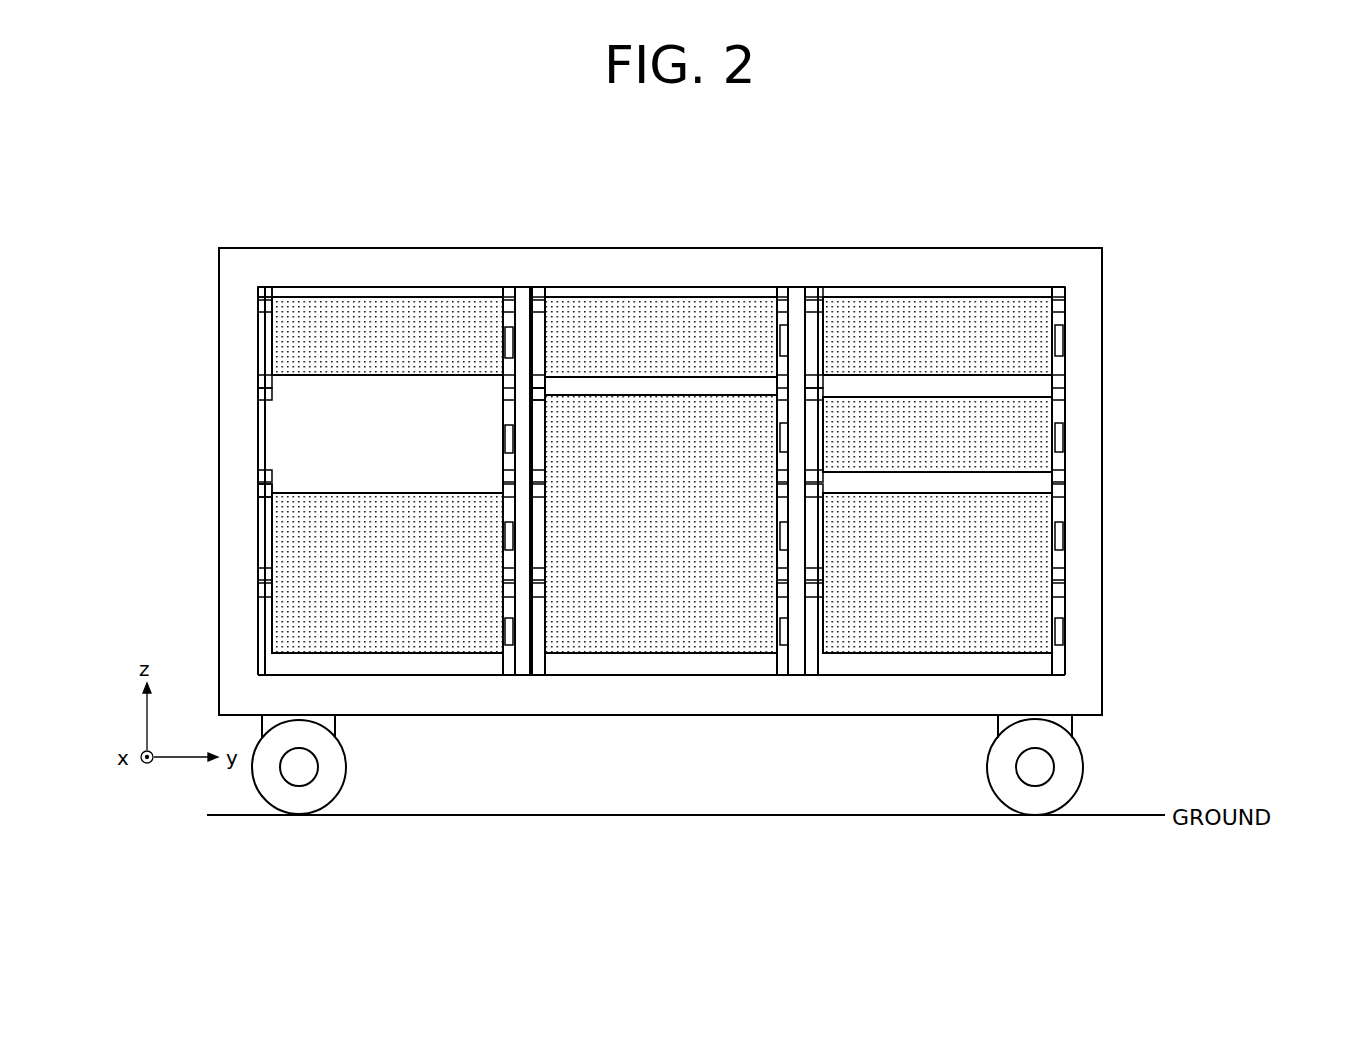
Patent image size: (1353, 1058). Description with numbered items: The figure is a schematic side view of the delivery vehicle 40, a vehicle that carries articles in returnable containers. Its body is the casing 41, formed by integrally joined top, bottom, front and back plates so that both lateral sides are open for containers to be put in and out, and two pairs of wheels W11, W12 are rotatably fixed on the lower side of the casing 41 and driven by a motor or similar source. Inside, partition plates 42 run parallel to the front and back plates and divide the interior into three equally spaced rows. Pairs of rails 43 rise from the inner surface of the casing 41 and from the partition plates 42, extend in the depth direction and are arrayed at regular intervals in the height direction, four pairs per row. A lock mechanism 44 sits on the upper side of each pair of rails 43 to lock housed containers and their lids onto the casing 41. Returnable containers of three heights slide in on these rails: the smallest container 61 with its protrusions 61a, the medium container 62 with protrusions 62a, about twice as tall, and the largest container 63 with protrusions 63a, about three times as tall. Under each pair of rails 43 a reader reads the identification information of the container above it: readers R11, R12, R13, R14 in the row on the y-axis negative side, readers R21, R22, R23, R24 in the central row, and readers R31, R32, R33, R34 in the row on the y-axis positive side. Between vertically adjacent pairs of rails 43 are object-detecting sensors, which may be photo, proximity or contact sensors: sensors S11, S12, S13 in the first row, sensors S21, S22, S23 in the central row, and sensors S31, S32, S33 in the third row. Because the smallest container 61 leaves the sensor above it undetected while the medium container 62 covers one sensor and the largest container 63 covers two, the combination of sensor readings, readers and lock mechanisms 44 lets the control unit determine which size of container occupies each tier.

The delivery vehicle 40 is at (1100, 228).
The casing 41 is at (304, 258).
The partition plate 42 is at (523, 288).
The rail 43 is at (1065, 310).
The lock mechanism 44 is at (1065, 291).
The returnable container of the smallest size 61 is at (387, 336).
The protrusion 61a is at (258, 297).
The returnable container of a medium size 62 is at (387, 573).
The protrusion 62a is at (258, 495).
The returnable container of the largest size 63 is at (661, 524).
The protrusion 63a is at (532, 398).
The sensor S11 is at (258, 380).
The sensor S12 is at (258, 475).
The sensor S13 is at (258, 573).
The sensor S21 is at (542, 383).
The sensor S22 is at (542, 478).
The sensor S23 is at (542, 576).
The sensor S31 is at (815, 383).
The sensor S32 is at (815, 478).
The sensor S33 is at (815, 576).
The reader R11 is at (505, 340).
The reader R12 is at (505, 440).
The reader R13 is at (505, 535).
The reader R14 is at (505, 630).
The reader R21 is at (780, 340).
The reader R22 is at (780, 438).
The reader R23 is at (780, 535).
The reader R24 is at (780, 630).
The reader R31 is at (1055, 340).
The reader R32 is at (1055, 438).
The reader R33 is at (1055, 535).
The reader R34 is at (1055, 630).
The wheel W11 is at (1082, 775).
The wheel W12 is at (345, 775).